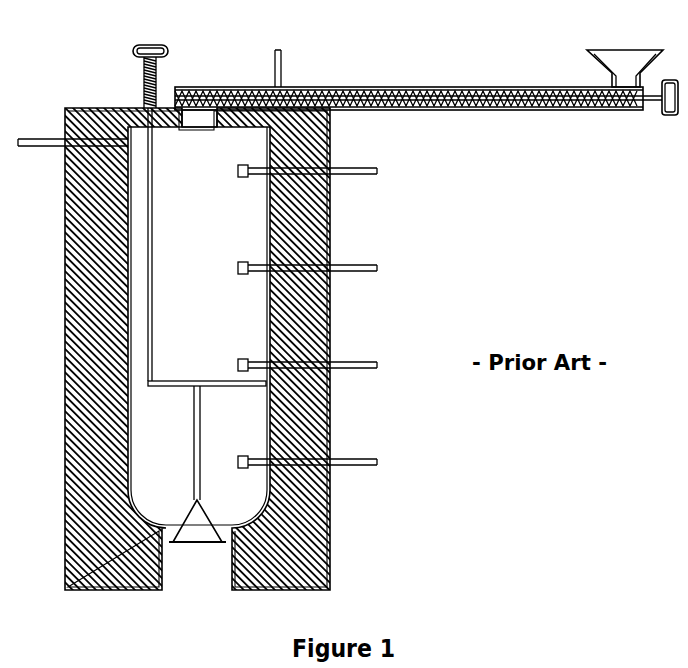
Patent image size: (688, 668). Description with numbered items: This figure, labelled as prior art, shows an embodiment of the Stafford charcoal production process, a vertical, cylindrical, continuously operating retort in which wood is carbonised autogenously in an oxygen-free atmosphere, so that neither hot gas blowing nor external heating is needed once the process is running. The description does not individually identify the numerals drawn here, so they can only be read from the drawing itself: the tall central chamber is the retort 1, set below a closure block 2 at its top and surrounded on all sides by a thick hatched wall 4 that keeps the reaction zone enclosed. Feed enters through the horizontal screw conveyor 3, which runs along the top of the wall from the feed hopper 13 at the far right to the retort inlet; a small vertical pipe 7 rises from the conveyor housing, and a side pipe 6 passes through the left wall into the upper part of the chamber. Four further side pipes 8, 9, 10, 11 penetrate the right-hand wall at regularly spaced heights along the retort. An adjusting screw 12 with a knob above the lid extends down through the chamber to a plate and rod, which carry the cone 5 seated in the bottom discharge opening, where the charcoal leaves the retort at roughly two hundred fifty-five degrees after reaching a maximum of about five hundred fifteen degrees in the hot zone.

The retort vessel 1 is at (268, 227).
The plug block 2 is at (198, 128).
The screw conveyor 3 is at (417, 87).
The furnace insulation wall 4 is at (65, 344).
The discharge cone valve 5 is at (190, 510).
The inlet pipe 6 is at (22, 137).
The vent pipe 7 is at (278, 48).
The side pipe 8 is at (377, 169).
The side pipe 9 is at (372, 265).
The side pipe 10 is at (358, 362).
The side pipe 11 is at (357, 460).
The adjusting screw 12 is at (150, 44).
The feed hopper 13 is at (627, 56).